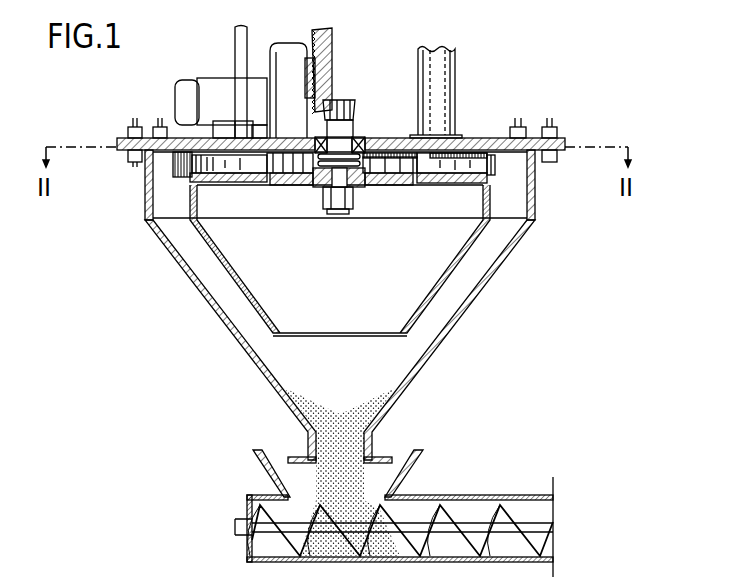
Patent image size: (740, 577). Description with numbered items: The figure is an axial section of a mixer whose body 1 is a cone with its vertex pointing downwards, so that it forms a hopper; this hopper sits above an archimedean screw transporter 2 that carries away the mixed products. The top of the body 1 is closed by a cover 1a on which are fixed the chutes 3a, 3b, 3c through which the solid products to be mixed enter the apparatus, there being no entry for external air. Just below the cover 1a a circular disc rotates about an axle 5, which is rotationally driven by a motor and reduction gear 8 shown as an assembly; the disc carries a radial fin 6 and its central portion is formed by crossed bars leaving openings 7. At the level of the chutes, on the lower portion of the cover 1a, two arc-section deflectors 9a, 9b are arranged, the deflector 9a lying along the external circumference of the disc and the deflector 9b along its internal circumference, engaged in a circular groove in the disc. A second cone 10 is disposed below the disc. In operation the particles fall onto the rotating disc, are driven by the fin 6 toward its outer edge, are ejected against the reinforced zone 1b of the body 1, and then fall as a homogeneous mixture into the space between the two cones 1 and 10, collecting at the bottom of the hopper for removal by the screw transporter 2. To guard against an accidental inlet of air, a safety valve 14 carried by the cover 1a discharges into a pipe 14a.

The body of the mixer 1 is at (250, 360).
The cover 1a is at (497, 143).
The reinforced zone 1b is at (173, 160).
The archimedean screw transporter 2 is at (258, 475).
The chute 3a is at (432, 90).
The chute 3b is at (438, 68).
The chute 3c is at (448, 88).
The axle 5 is at (340, 177).
The radial fin 6 is at (287, 170).
The openings 7 is at (290, 177).
The motor and reduction gear 8 is at (262, 73).
The deflector 9a is at (495, 167).
The deflector 9b is at (408, 165).
The cone 10 is at (227, 268).
The safety valve 14 is at (232, 132).
The pipe 14a is at (241, 43).